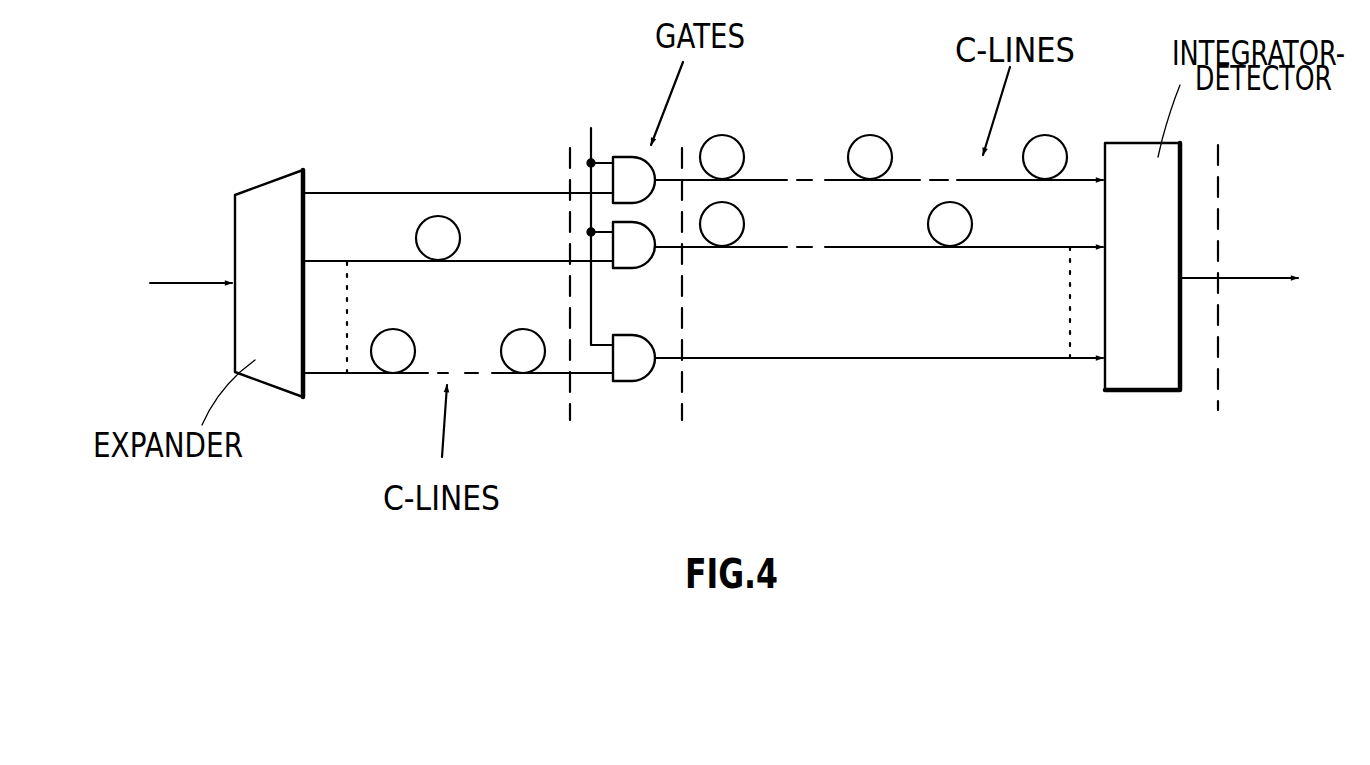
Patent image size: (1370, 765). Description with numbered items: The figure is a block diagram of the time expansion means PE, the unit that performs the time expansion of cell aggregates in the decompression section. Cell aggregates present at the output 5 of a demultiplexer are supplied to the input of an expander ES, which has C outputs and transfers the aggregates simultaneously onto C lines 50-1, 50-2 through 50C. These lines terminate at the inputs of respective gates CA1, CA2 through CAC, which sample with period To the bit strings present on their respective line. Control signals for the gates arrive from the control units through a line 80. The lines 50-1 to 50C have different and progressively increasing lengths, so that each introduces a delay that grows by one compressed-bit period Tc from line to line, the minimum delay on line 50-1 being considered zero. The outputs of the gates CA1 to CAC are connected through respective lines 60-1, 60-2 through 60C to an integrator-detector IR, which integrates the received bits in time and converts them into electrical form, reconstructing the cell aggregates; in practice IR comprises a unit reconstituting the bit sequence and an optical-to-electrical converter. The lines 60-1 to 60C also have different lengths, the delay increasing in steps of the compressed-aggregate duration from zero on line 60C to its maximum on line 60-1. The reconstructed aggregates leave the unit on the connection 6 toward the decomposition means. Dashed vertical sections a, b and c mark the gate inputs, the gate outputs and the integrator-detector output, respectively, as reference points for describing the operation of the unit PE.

The output of demultiplexer 5 is at (167, 283).
The expander ES is at (257, 186).
The first expander output line 50-1 is at (373, 193).
The second expander output line 50-2 is at (373, 261).
The C-th expander output line 50C is at (360, 373).
The control line 80 is at (591, 128).
The first gate CA1 is at (627, 157).
The second gate CA2 is at (630, 268).
The C-th gate CAC is at (630, 381).
The first gate output line 60-1 is at (962, 177).
The second gate output line 60-2 is at (990, 247).
The C-th gate output line 60C is at (913, 358).
The integrator-detector IR is at (1117, 370).
The connection to decomposition means 6 is at (1200, 282).
The section a is at (570, 302).
The section b is at (686, 302).
The section c is at (1219, 299).
The time expansion means PE is at (1073, 512).